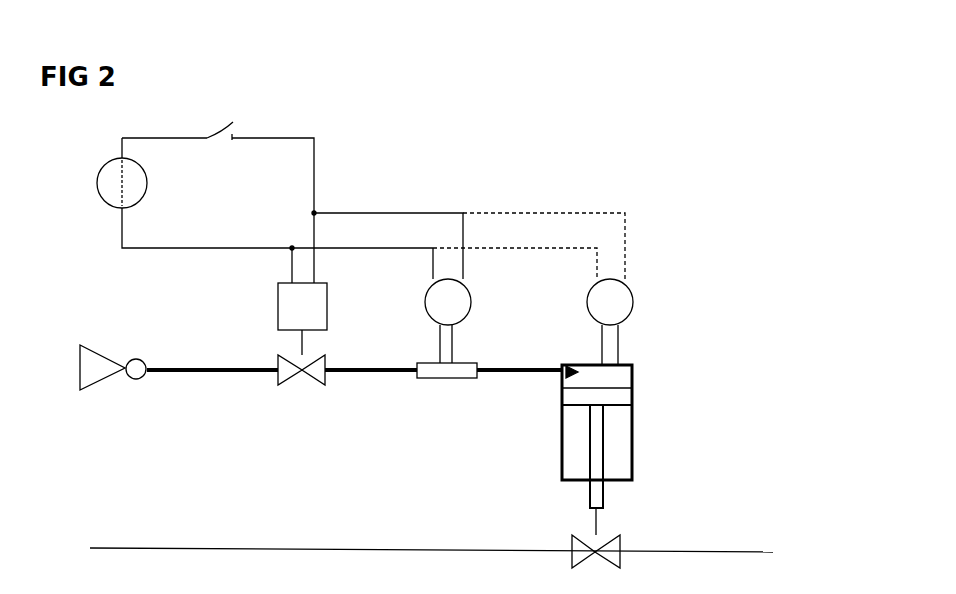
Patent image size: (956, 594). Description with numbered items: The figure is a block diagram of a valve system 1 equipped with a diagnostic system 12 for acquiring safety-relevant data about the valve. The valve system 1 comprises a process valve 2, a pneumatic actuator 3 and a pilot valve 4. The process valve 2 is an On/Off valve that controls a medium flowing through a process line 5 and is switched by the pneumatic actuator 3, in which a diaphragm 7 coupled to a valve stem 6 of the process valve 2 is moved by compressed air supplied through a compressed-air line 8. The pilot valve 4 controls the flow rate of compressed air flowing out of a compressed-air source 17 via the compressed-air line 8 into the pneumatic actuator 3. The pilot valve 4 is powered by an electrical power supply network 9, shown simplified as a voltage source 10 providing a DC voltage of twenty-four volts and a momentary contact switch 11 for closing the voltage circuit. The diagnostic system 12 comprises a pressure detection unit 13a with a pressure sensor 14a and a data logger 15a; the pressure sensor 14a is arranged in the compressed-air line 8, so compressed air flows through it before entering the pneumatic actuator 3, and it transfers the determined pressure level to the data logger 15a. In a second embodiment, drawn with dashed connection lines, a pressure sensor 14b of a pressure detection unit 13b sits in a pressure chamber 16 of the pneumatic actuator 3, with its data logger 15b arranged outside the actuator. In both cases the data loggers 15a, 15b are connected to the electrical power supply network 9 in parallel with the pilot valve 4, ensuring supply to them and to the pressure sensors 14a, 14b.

The valve system 1 is at (508, 167).
The process valve 2 is at (608, 544).
The pneumatic actuator 3 is at (621, 436).
The pilot valve 4 is at (290, 385).
The process line 5 is at (357, 548).
The valve stem 6 is at (516, 378).
The diaphragm 7 is at (634, 400).
The compressed-air line 8 is at (583, 540).
The electrical power supply network 9 is at (288, 126).
The voltage source 10 is at (96, 183).
The momentary contact switch 11 is at (212, 112).
The diagnostic system 12 is at (414, 167).
The pressure detection unit 13a is at (470, 352).
The pressure detection unit 13b is at (626, 332).
The pressure sensor 14a is at (440, 380).
The pressure sensor 14b is at (620, 347).
The data logger 15a is at (424, 300).
The data logger 15b is at (586, 300).
The pressure chamber 16 is at (634, 377).
The compressed-air source 17 is at (115, 385).